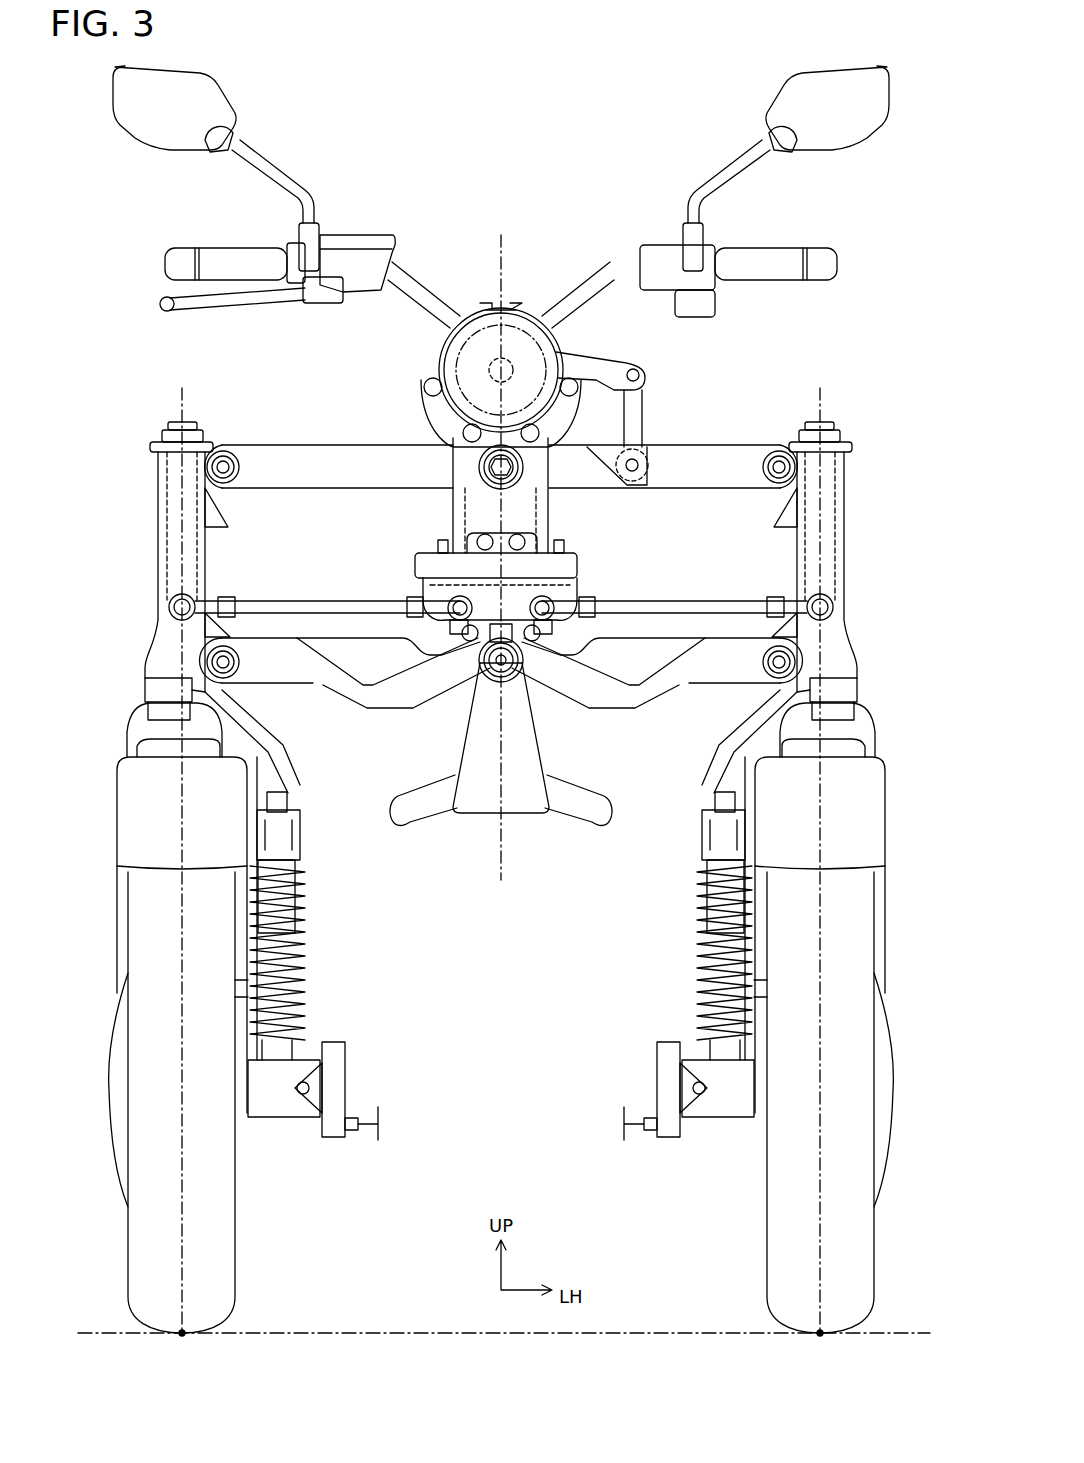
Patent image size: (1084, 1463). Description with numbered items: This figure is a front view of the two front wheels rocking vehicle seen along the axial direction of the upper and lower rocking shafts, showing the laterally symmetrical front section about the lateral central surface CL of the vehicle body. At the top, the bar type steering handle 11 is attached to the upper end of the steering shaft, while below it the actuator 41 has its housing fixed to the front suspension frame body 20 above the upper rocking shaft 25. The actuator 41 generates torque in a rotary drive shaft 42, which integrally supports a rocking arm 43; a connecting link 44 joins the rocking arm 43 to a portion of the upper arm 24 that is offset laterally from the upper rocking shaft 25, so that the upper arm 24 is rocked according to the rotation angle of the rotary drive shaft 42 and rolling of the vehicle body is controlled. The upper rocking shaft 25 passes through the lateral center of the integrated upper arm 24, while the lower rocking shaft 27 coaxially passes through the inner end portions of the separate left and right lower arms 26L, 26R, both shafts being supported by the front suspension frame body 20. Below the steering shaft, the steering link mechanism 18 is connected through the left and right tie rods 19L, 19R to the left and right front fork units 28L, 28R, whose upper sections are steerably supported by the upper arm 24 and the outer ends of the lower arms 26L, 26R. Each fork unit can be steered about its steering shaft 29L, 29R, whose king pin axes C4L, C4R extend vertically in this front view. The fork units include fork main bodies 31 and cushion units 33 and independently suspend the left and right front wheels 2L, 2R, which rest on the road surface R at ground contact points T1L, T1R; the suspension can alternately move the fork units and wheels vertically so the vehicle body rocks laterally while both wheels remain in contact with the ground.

The lateral central surface of the vehicle body CL is at (505, 248).
The bar type steering handle 11 is at (606, 268).
The actuator 41 is at (468, 352).
The rotary drive shaft 42 is at (489, 370).
The rocking arm 43 is at (586, 368).
The connecting link 44 is at (640, 410).
The upper arm 24 is at (360, 447).
The upper rocking shaft 25 is at (485, 470).
The steering link mechanism 18 is at (410, 558).
The right tie rod 19R is at (312, 600).
The left tie rod 19L is at (685, 600).
The right steering shaft (king pin shaft) 29R is at (175, 491).
The left steering shaft (king pin shaft) 29L is at (827, 491).
The right king pin axis C4R is at (180, 538).
The left king pin axis C4L is at (822, 538).
The right front fork unit 28R is at (143, 692).
The left front fork unit 28L is at (859, 692).
The fork main body 31 is at (158, 712).
The right lower arm 26R is at (337, 690).
The left lower arm 26L is at (665, 690).
The lower rocking shaft 27 is at (490, 663).
The front suspension frame body 20 is at (466, 822).
The cushion unit 33 is at (295, 906).
The right front wheel 2R is at (122, 1250).
The left front wheel 2L is at (880, 1250).
The road surface R is at (360, 1333).
The ground contact point of the right front wheel T1R is at (180, 1337).
The ground contact point of the left front wheel T1L is at (822, 1337).